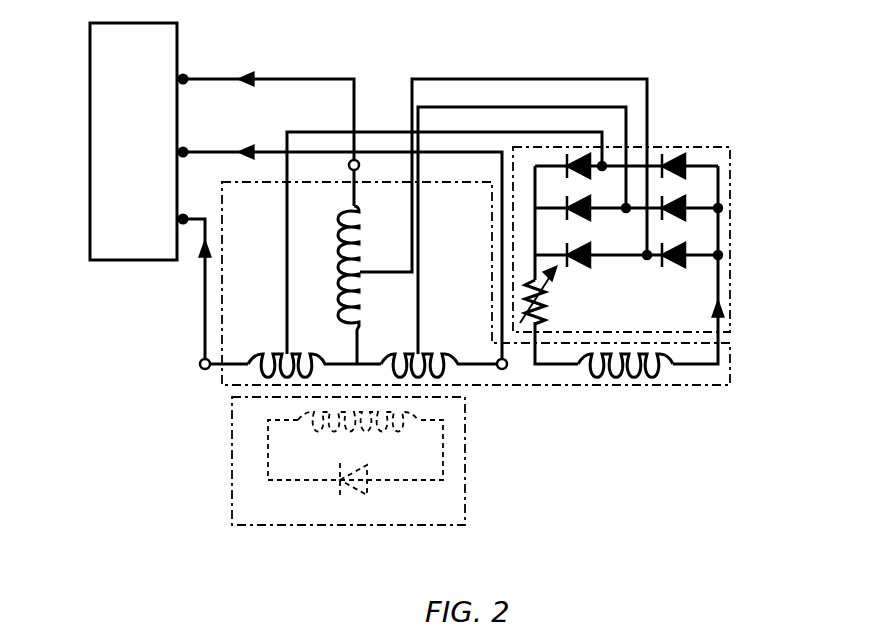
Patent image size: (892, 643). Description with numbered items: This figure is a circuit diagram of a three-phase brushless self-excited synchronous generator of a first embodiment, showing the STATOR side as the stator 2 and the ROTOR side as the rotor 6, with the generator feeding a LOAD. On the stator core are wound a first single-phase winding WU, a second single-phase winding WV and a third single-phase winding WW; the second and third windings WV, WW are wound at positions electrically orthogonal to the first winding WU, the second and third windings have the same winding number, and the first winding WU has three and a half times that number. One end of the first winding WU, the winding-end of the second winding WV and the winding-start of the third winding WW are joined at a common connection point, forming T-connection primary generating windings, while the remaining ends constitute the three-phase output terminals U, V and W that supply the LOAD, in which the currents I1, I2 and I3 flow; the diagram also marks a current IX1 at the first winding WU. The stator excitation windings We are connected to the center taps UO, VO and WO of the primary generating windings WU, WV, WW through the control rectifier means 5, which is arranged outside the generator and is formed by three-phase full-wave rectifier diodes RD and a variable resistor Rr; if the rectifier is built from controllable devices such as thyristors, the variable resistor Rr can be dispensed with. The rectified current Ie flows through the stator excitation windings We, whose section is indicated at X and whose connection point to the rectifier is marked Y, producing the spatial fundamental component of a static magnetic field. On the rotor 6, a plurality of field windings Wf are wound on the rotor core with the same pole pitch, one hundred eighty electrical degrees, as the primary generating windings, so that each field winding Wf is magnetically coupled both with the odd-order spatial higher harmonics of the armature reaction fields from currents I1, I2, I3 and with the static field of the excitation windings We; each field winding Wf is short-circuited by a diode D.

The stator 2 is at (226, 246).
The control rectifier means 5 is at (730, 277).
The rotor 6 is at (232, 470).
The load LOAD is at (133, 141).
The three-phase output terminal U is at (268, 123).
The three-phase output terminal V is at (389, 242).
The three-phase output terminal W is at (195, 277).
The current I1 is at (266, 64).
The current I2 is at (262, 136).
The current I3 is at (198, 273).
The current IX1 is at (401, 50).
The first single-phase winding WU is at (343, 270).
The second single-phase winding WV is at (427, 355).
The third single-phase winding WW is at (270, 353).
The center tap u UO is at (503, 176).
The center tap v VO is at (500, 232).
The center tap w WO is at (316, 338).
The three-phase full-wave rectifier diodes RD is at (675, 152).
The variable resistor Rr is at (543, 315).
The current Ie is at (703, 309).
The excitation winding section X is at (730, 360).
The connection point Y is at (535, 353).
The stator excitation windings We is at (652, 377).
The field windings Wf is at (405, 430).
The diode D is at (350, 495).
The stator STATOR is at (222, 343).
The rotor ROTOR is at (232, 525).